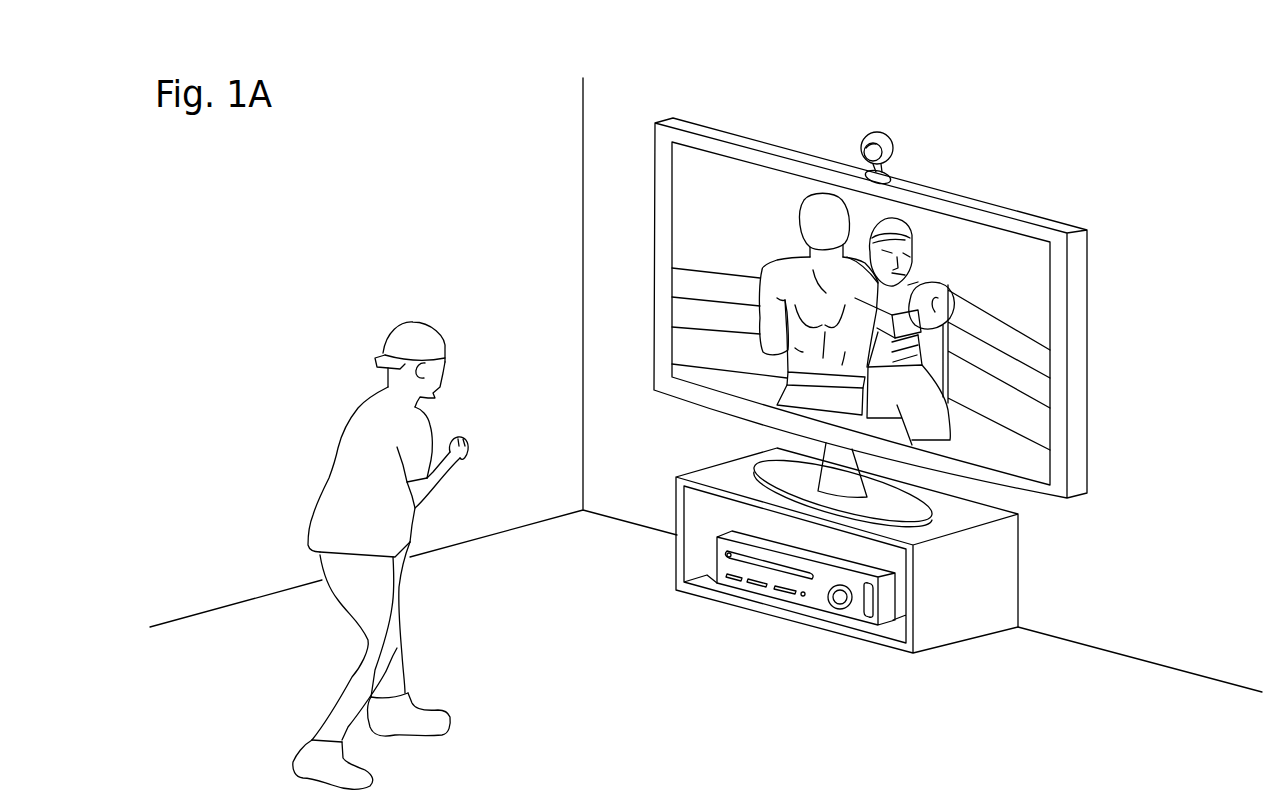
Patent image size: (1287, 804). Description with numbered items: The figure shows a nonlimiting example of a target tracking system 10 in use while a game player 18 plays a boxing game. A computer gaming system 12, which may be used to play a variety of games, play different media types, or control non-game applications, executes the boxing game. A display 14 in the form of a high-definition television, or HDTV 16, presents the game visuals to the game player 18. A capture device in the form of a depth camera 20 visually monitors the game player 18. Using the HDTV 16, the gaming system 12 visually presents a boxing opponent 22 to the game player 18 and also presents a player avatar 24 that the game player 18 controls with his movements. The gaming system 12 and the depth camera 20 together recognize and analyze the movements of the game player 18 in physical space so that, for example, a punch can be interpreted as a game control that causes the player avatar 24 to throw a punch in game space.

The target tracking system 10 is at (963, 100).
The computer gaming system 12 is at (815, 609).
The display 14 is at (1053, 423).
The HDTV 16 is at (1088, 308).
The game player 18 is at (403, 655).
The depth camera 20 is at (893, 149).
The boxing opponent 22 is at (904, 256).
The player avatar 24 is at (760, 273).